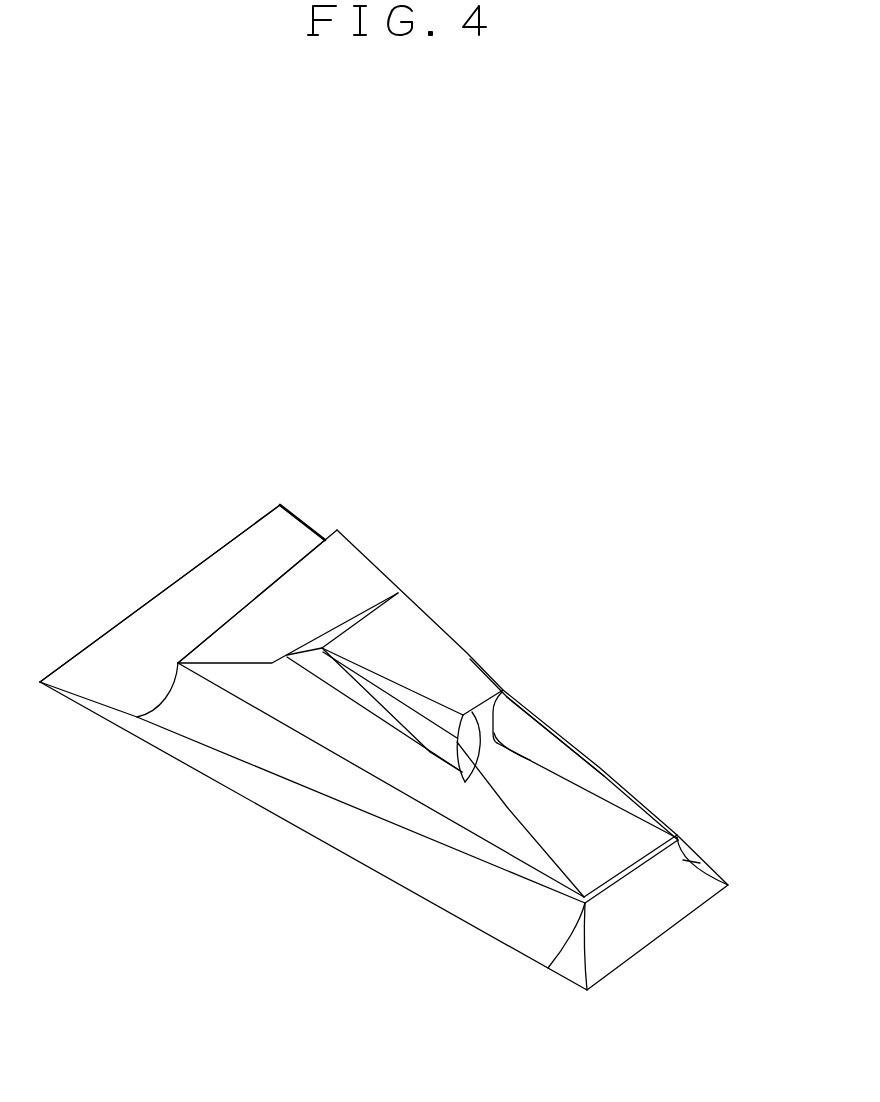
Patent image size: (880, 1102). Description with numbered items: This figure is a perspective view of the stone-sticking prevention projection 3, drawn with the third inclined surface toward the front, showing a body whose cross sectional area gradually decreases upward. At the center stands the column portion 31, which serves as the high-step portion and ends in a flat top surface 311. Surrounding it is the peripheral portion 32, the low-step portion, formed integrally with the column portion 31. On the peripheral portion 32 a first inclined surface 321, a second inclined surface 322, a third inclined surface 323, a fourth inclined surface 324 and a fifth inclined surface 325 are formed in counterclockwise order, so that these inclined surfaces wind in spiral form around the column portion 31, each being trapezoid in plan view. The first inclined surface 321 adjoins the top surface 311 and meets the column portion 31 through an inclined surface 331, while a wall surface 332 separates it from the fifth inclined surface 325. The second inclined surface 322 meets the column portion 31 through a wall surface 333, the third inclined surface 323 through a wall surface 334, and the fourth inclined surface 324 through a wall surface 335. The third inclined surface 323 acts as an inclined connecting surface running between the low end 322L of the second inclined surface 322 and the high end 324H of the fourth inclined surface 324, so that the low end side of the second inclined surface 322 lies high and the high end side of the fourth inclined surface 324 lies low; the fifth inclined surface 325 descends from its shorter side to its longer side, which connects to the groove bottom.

The stone-sticking prevention projection 3 is at (581, 562).
The column portion 31 is at (398, 632).
The peripheral portion 32 is at (345, 575).
The top surface 311 is at (452, 680).
The first inclined surface 321 is at (280, 613).
The second inclined surface 322 is at (373, 747).
The low end of the second inclined surface 322L is at (493, 822).
The third inclined surface 323 is at (613, 848).
The fourth inclined surface 324 is at (523, 733).
The high end of the fourth inclined surface 324H is at (613, 792).
The fifth inclined surface 325 is at (173, 608).
The inclined surface 331 is at (315, 643).
The wall surface 332 is at (176, 664).
The wall surface 333 is at (373, 677).
The wall surface 334 is at (517, 757).
The wall surface 335 is at (497, 710).